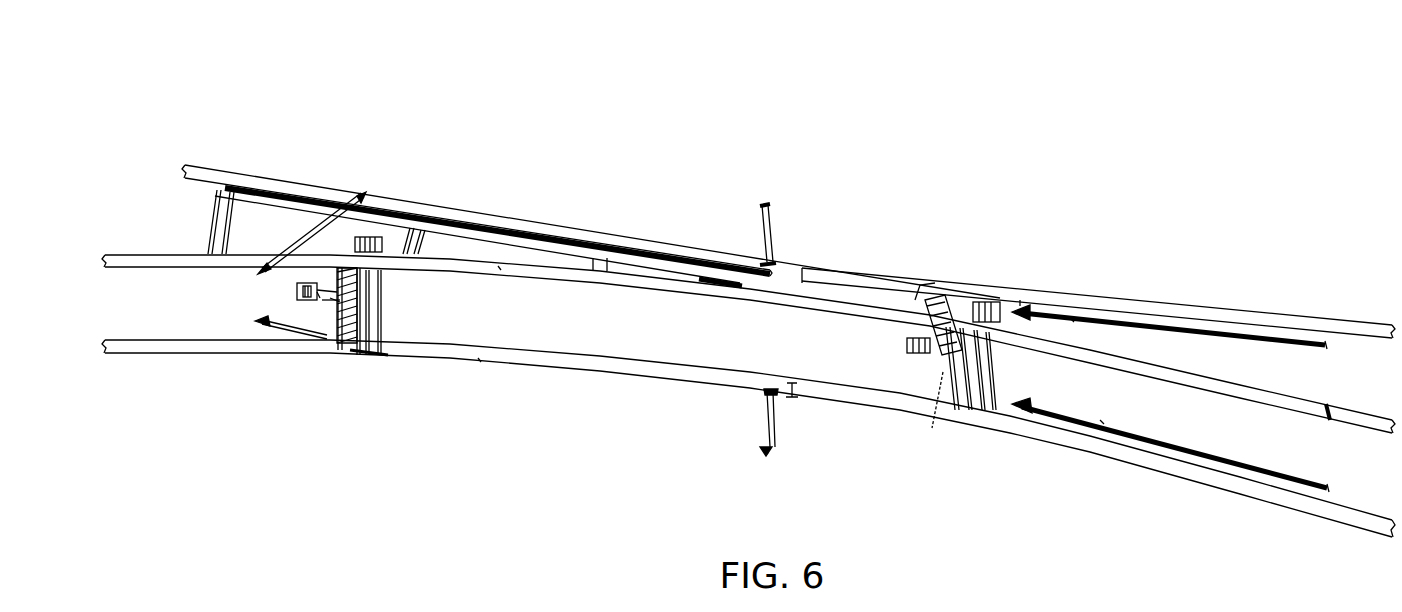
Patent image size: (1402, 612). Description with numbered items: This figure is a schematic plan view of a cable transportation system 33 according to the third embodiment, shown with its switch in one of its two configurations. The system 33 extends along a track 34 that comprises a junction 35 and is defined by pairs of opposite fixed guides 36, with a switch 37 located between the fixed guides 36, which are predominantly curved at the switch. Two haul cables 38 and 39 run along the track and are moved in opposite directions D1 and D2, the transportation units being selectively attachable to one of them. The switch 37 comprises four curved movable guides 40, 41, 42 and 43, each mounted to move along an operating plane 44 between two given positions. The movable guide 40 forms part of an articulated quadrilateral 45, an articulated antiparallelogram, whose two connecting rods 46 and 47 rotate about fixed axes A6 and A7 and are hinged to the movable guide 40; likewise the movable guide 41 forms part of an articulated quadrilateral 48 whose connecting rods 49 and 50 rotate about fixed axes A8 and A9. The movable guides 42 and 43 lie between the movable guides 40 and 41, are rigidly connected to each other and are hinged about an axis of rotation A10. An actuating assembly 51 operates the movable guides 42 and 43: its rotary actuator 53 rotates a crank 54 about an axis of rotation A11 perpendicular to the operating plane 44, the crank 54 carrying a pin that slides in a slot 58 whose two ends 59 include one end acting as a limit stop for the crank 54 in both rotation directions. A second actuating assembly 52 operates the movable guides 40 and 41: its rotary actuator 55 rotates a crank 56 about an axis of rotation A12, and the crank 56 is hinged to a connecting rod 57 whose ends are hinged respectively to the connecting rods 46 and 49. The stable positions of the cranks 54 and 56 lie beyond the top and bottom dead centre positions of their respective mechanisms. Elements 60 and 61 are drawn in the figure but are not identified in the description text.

The cable transportation system 33 is at (960, 161).
The track 34 is at (1294, 248).
The junction 35 is at (667, 430).
The fixed guides 36 is at (748, 375).
The switch 37 is at (831, 217).
The haul cable 38 is at (1105, 280).
The haul cable 39 is at (1140, 477).
The movable guide 40 is at (591, 228).
The movable guide 41 is at (498, 386).
The movable guide 42 is at (478, 227).
The movable guide 43 is at (544, 294).
The operating plane 44 is at (943, 276).
The articulated quadrilateral 45 is at (475, 191).
The connecting rod 46 is at (331, 239).
The connecting rod 47 is at (738, 234).
The articulated quadrilateral 48 is at (534, 457).
The connecting rod 49 is at (298, 347).
The connecting rod 50 is at (777, 420).
The actuating assembly 51 is at (1042, 371).
The actuating assembly 52 is at (408, 300).
The rotary actuator 53 is at (909, 368).
The crank 54 is at (990, 356).
The rotary actuator 55 is at (324, 346).
The crank 56 is at (327, 280).
The connecting rod 57 is at (369, 332).
The slot 58 is at (957, 287).
The ends 59 is at (897, 338).
The slide bar 60 is at (367, 281).
The slide bar 61 is at (387, 311).
The fixed axis A6 is at (260, 270).
The fixed axis A7 is at (744, 175).
The fixed axis A8 is at (258, 321).
The fixed axis A9 is at (794, 469).
The axis of rotation A10 is at (1361, 385).
The axis of rotation A11 is at (939, 412).
The axis of rotation A12 is at (304, 355).
The direction D1 is at (1169, 339).
The direction D2 is at (1170, 444).